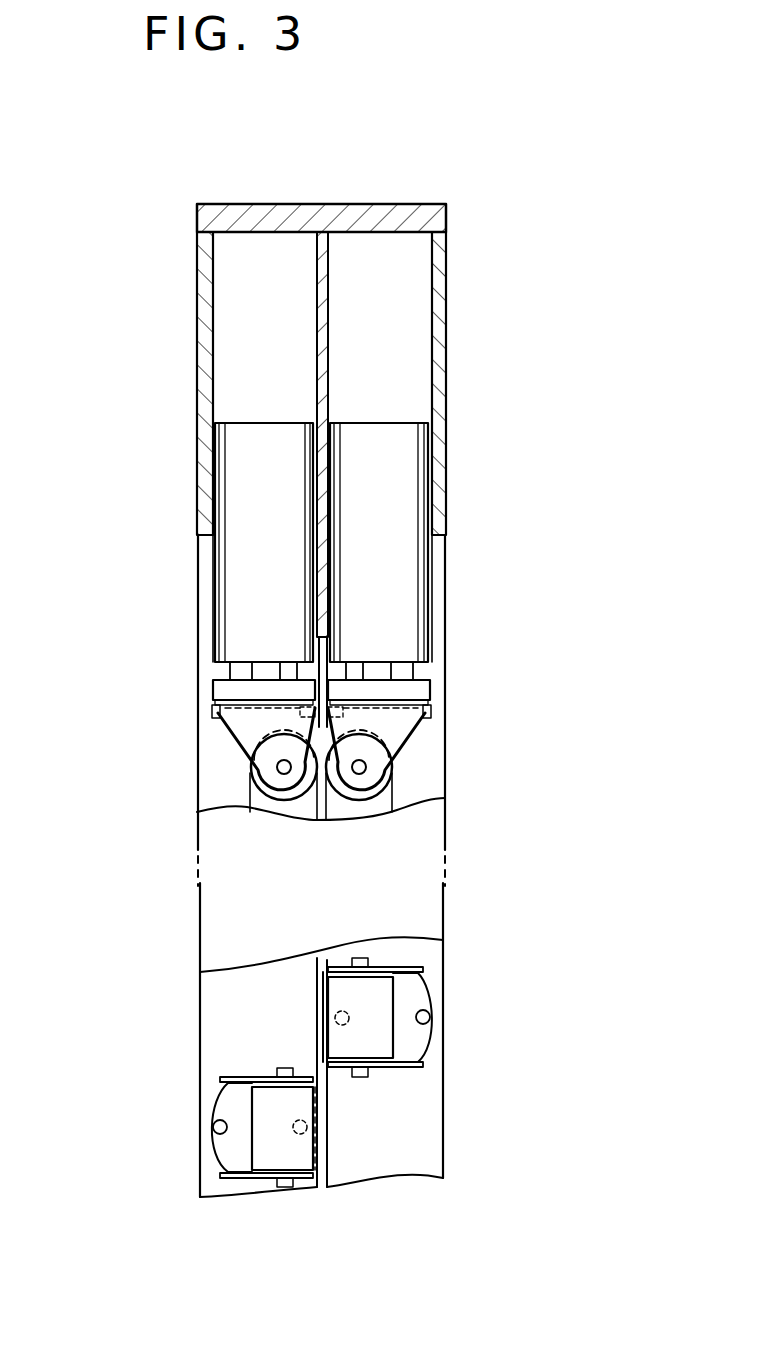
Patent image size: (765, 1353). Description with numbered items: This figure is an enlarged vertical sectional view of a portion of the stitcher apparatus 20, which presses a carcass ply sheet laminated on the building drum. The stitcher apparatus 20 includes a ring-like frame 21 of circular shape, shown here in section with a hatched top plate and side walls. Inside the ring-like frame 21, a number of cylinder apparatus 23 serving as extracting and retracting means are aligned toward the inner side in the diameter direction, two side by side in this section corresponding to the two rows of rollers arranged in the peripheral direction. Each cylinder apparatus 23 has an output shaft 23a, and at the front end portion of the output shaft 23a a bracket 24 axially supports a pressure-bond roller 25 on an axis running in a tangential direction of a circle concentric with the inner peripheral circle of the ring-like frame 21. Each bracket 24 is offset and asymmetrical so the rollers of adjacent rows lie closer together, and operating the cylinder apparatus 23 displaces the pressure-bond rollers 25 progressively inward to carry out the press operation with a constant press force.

The stitcher apparatus 20 is at (140, 327).
The ring-like frame 21 is at (431, 204).
The cylinder apparatus 23 is at (262, 498).
The output shaft 23a is at (237, 673).
The bracket 24 is at (248, 718).
The pressure-bond roller 25 is at (248, 775).